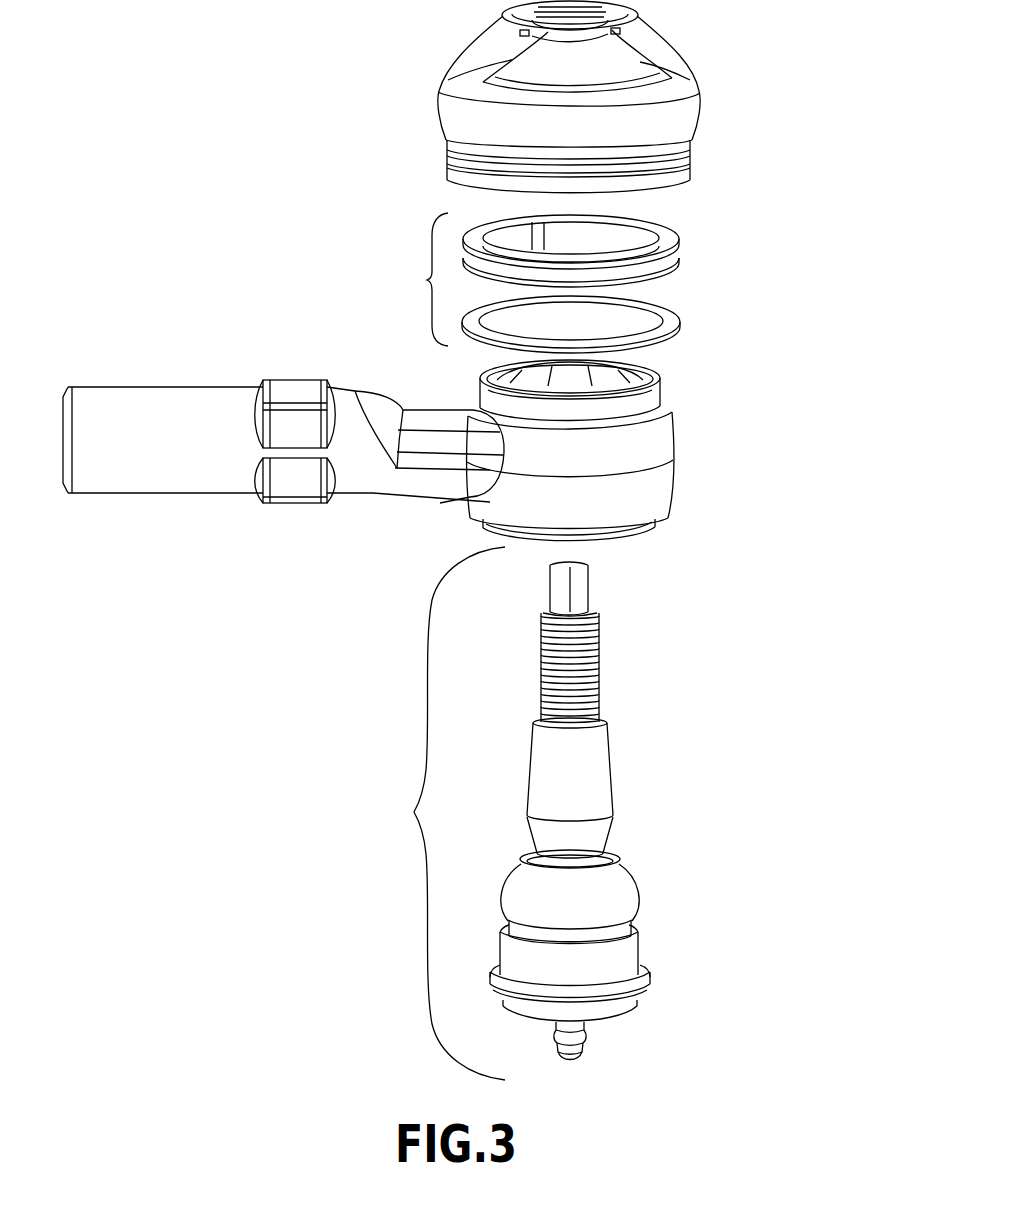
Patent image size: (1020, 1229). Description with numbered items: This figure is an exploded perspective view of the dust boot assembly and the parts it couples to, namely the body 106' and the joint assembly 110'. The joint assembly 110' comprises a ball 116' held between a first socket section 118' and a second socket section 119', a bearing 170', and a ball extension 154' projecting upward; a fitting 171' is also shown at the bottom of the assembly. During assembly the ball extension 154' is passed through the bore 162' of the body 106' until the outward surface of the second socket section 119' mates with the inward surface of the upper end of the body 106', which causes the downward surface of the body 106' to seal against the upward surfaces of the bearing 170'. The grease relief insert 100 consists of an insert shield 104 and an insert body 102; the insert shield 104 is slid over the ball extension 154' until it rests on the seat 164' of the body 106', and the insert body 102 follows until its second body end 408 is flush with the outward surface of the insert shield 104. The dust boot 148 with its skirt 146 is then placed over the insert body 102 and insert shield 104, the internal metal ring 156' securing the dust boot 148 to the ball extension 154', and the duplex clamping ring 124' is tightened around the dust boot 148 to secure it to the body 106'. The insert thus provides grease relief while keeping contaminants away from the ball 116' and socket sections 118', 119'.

The internal metal ring 156' is at (609, 18).
The dust boot 148 is at (680, 60).
The duplex clamping ring 124' is at (619, 145).
The skirt 146 is at (693, 160).
The insert body 102 is at (681, 234).
The insert shield 104 is at (679, 325).
The grease relief insert 100 is at (419, 279).
The second body end 408 is at (488, 270).
The bore 162' is at (621, 364).
The seat 164' is at (613, 390).
The body 106' is at (415, 460).
The joint assembly 110' is at (488, 813).
The ball extension 154' is at (618, 788).
The second socket section 119' is at (617, 883).
The ball 116' is at (621, 910).
The first socket section 118' is at (616, 940).
The bearing 170' is at (611, 978).
The grease fitting 171' is at (641, 1035).